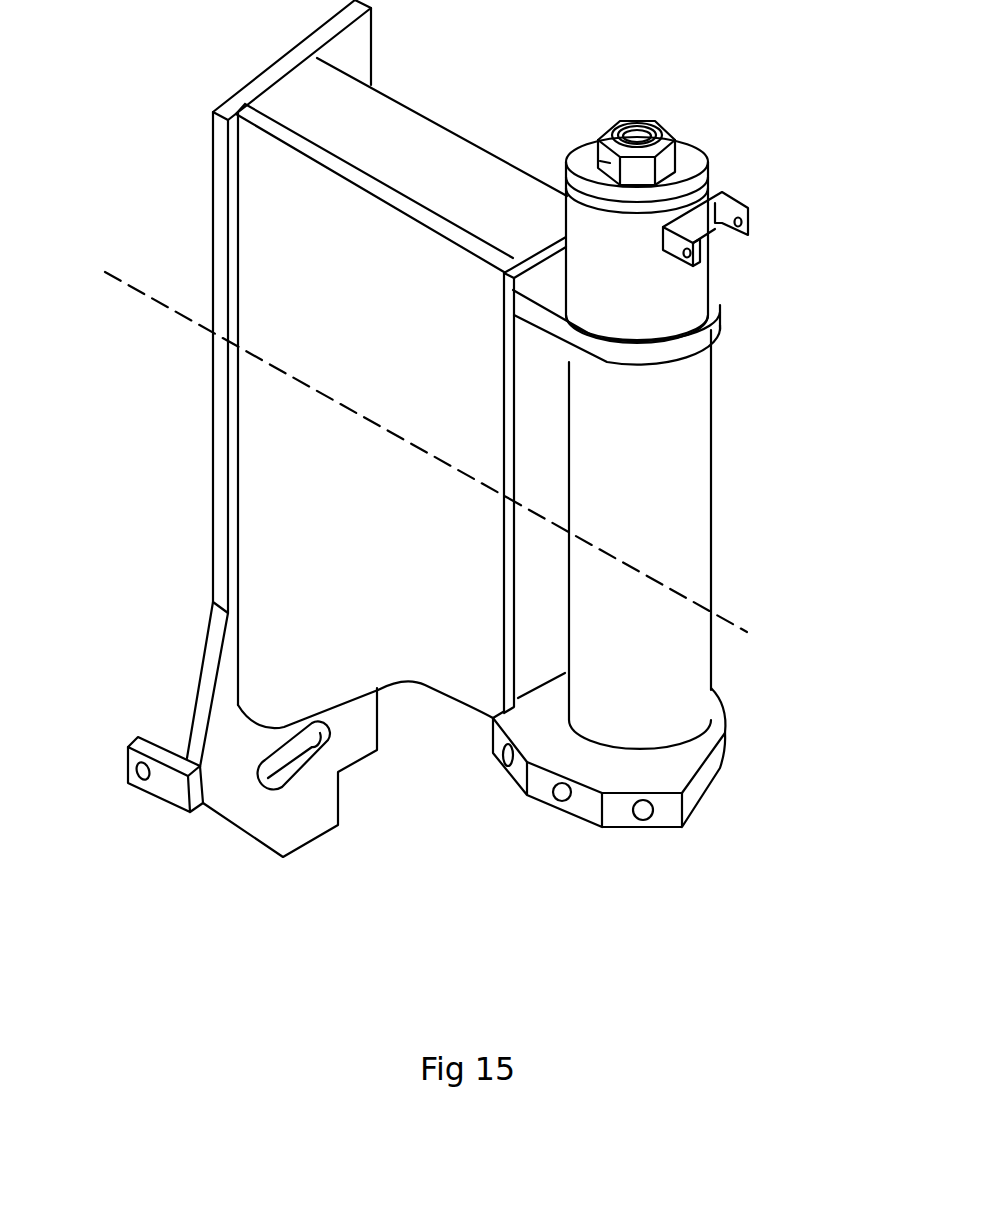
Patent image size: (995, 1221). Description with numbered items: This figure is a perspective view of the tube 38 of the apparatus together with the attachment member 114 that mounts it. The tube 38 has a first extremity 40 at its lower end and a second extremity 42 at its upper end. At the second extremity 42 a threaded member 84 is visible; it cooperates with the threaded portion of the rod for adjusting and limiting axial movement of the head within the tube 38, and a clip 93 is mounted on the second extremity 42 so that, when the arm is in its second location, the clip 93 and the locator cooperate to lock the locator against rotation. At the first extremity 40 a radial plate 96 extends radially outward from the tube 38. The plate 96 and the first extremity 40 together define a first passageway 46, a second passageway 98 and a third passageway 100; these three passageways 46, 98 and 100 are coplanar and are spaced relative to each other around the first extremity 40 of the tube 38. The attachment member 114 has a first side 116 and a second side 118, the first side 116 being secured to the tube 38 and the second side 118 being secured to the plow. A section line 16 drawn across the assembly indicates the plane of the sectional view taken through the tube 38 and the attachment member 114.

The section line 16- 16 is at (92, 265).
The tube 38 is at (690, 468).
The first extremity 40 is at (688, 720).
The second extremity 42 is at (650, 263).
The first passageway 46 is at (562, 801).
The threaded member 84 is at (667, 157).
The clip 93 is at (748, 194).
The radial plate 96 is at (662, 776).
The second passageway 98 is at (643, 820).
The third passageway 100 is at (515, 772).
The attachment member 114 is at (378, 667).
The first side 116 is at (508, 318).
The second side 118 is at (213, 490).